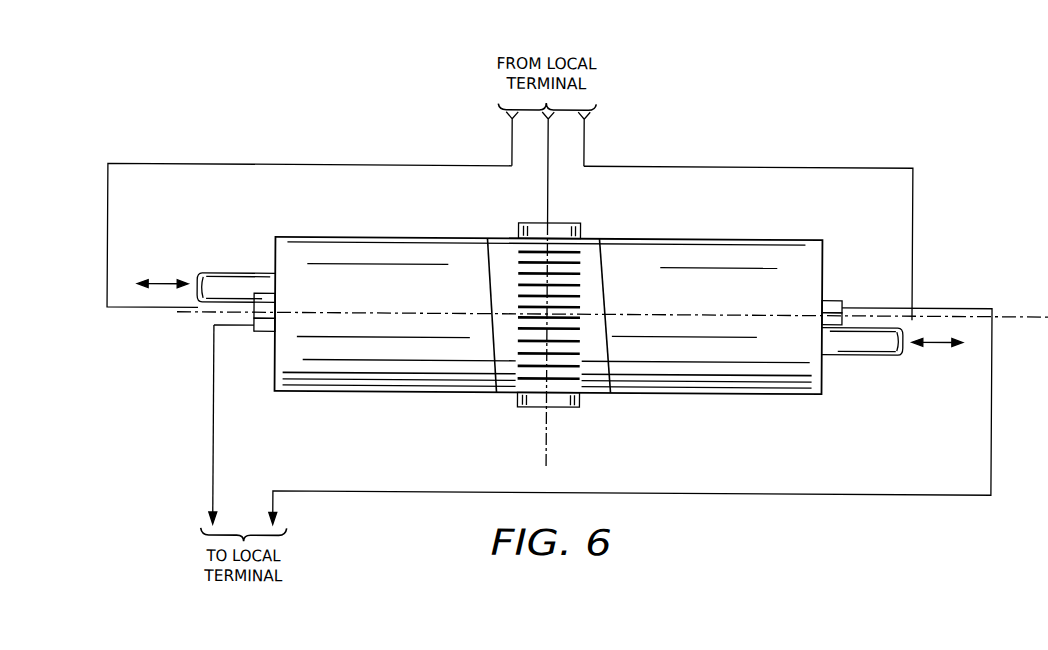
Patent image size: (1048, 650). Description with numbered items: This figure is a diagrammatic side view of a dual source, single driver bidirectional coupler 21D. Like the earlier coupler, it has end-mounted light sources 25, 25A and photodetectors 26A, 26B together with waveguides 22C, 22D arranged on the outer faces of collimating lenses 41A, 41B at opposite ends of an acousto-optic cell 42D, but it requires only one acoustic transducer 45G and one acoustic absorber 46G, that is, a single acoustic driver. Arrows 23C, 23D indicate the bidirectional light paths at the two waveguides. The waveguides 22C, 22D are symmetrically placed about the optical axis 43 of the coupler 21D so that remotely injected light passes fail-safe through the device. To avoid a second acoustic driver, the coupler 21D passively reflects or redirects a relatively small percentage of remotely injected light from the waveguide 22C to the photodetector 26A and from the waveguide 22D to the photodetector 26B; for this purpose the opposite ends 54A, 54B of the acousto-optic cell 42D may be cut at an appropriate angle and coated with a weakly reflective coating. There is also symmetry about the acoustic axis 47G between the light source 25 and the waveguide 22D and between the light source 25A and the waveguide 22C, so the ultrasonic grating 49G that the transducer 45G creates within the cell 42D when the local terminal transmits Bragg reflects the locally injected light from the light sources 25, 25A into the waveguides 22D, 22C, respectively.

The bidirectional coupler 21D is at (395, 393).
The waveguide 22C is at (218, 284).
The waveguide 22D is at (857, 344).
The direction of movement arrow 23C is at (163, 288).
The direction of movement arrow 23D is at (937, 341).
The light source 25 is at (265, 302).
The light source 25A is at (827, 319).
The photodetector 26A is at (267, 333).
The photodetector 26B is at (832, 300).
The collimating lens 41A is at (365, 253).
The collimating lens 41B is at (738, 248).
The acousto-optic cell 42D is at (592, 243).
The optical axis 43 is at (373, 311).
The acoustic transducer 45G is at (533, 224).
The acoustic absorber 46G is at (533, 408).
The acoustic axis 47G is at (548, 460).
The ultrasonic grating 49G is at (570, 353).
The end of acousto-optic cell 54A is at (488, 256).
The end of acousto-optic cell 54B is at (606, 288).